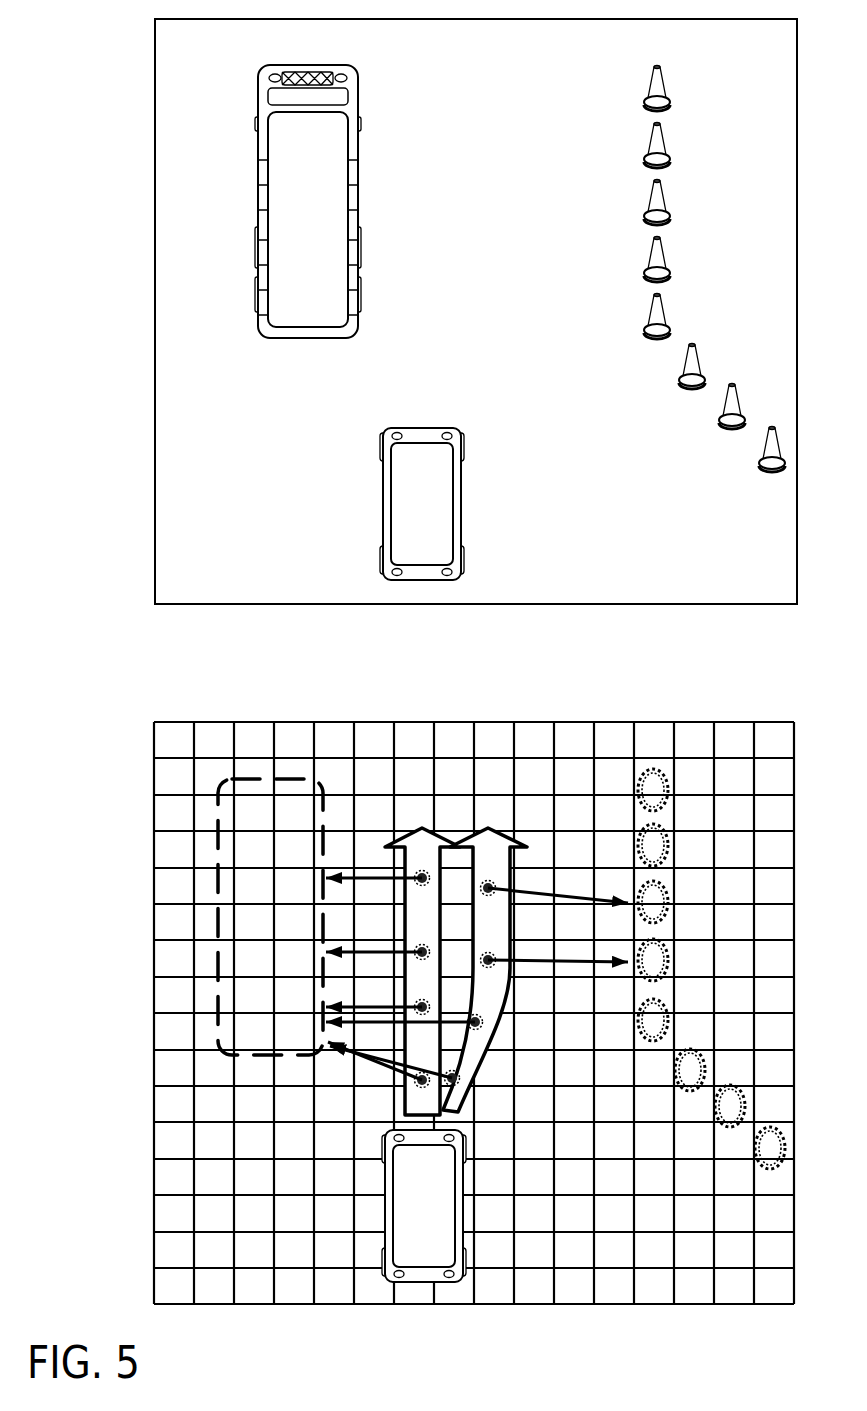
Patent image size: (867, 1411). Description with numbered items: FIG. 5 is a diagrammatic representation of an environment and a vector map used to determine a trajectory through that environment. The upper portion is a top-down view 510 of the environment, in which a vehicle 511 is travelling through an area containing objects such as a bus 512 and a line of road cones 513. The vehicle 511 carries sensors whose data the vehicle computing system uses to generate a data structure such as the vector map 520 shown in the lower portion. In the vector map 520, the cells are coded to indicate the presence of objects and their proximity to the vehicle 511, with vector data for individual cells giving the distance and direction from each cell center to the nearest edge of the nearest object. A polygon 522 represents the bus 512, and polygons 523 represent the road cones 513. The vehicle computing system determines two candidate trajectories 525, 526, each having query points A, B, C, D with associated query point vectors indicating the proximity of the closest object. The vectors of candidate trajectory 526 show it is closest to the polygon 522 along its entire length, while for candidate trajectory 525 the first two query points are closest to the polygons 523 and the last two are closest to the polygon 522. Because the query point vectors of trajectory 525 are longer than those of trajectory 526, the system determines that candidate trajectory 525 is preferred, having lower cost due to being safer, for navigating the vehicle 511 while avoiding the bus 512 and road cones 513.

The top-down view 510 is at (103, 27).
The vehicle 511 is at (423, 855).
The bus 512 is at (308, 201).
The road cones 513 is at (628, 75).
The vector map 520 is at (105, 705).
The polygon 522 is at (262, 779).
The polygons 523 is at (655, 712).
The candidate trajectory 525 is at (488, 826).
The candidate trajectory 526 is at (400, 840).